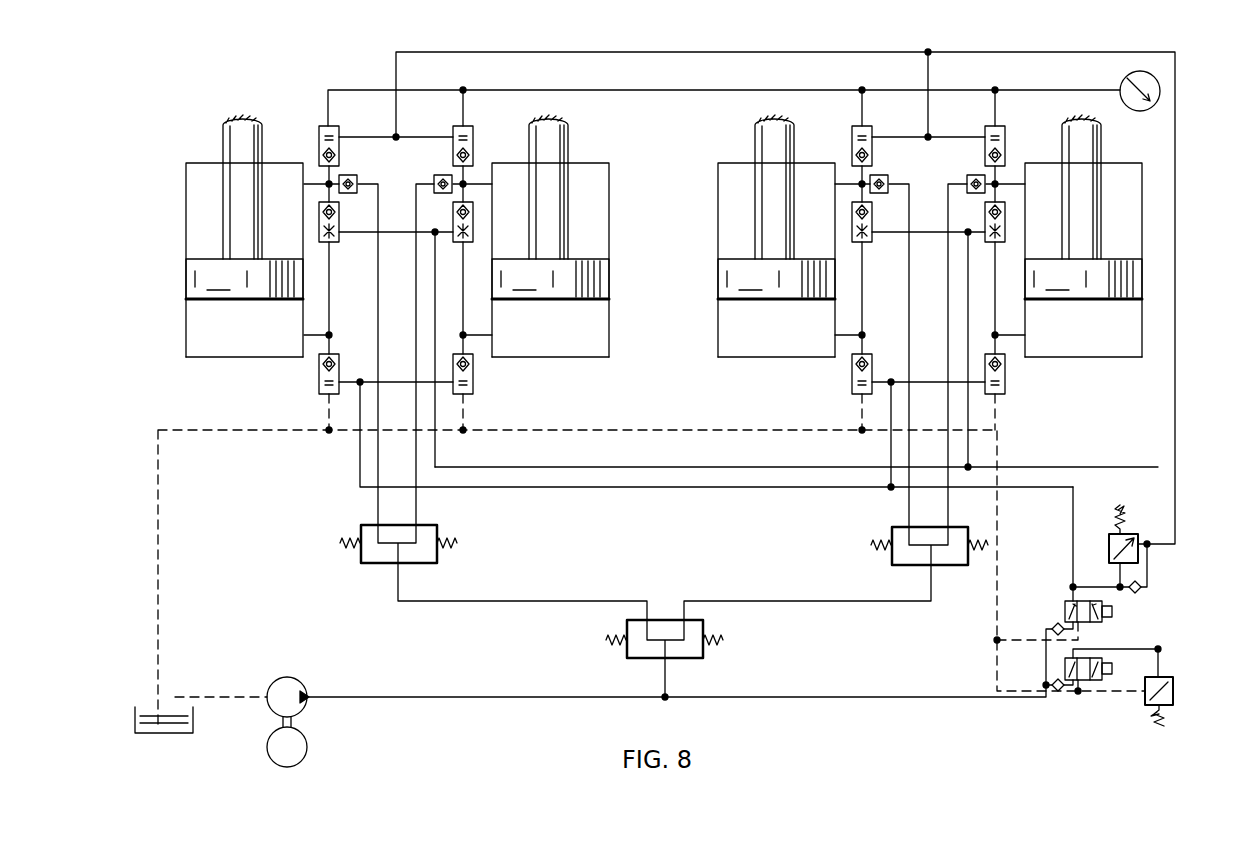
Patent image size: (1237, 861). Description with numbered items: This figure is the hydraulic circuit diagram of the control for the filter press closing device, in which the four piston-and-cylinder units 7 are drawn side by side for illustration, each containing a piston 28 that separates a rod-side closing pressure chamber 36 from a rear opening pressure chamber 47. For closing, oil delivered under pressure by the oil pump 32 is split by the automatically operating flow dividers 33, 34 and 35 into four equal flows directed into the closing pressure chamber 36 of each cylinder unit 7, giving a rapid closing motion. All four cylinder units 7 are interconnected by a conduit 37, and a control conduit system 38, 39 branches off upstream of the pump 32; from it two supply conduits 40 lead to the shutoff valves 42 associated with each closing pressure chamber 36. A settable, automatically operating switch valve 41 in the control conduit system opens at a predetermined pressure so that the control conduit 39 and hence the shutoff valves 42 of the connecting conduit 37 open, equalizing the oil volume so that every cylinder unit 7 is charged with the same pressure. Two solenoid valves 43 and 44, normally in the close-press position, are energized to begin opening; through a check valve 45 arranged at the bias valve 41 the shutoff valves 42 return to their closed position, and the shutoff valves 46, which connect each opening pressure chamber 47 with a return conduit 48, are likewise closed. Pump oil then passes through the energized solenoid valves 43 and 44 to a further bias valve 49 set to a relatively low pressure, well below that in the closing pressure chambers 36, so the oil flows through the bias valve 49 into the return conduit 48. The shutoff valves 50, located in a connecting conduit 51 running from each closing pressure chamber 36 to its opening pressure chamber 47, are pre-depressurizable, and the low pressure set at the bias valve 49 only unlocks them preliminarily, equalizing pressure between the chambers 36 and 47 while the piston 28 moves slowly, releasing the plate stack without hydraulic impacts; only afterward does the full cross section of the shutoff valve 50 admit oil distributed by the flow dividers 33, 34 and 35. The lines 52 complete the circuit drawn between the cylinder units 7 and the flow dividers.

The piston-and-cylinder unit 7 is at (186, 213).
The piston 28 is at (664, 279).
The oil pump 32 is at (288, 677).
The flow divider 33 is at (703, 627).
The flow divider 34 is at (437, 540).
The flow divider 35 is at (892, 532).
The closing pressure chamber 36 is at (282, 172).
The conduit 37 is at (675, 92).
The control conduit 38 is at (808, 697).
The control conduit 39 is at (1175, 408).
The supply conduit 40 is at (410, 141).
The switch valve 41 is at (1109, 546).
The shutoff valve 42 is at (339, 132).
The solenoid valve 43 is at (1102, 619).
The solenoid valve 44 is at (1102, 664).
The check valve 45 is at (1141, 590).
The shutoff valve 46 is at (319, 380).
The opening pressure chamber 47 is at (248, 357).
The return conduit 48 is at (678, 430).
The bias valve 49 is at (1173, 688).
The pre-depressurizable shutoff valve 50 is at (339, 242).
The connecting conduit 51 is at (329, 316).
The connecting line 52 is at (414, 290).